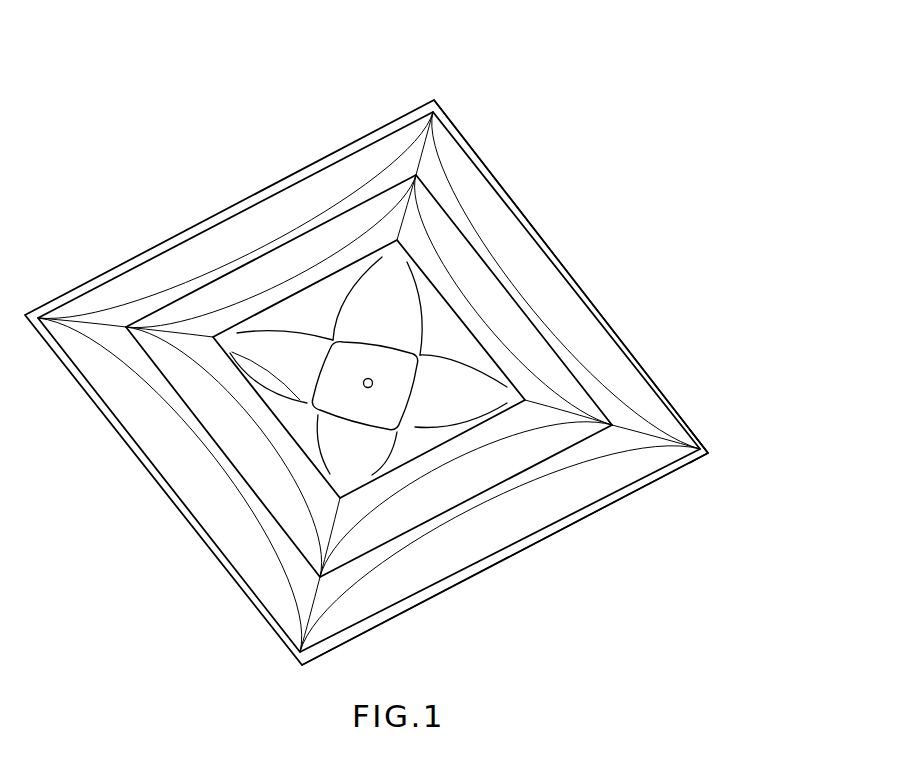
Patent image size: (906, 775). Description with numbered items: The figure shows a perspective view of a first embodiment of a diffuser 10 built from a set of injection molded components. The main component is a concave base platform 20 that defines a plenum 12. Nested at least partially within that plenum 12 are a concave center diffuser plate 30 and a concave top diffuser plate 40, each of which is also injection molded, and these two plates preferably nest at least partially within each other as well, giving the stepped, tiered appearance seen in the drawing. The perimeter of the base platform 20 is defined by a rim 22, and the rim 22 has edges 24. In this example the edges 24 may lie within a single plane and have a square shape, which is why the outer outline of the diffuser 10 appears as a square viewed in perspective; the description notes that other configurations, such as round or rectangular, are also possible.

The diffuser 10 is at (482, 116).
The plenum 12 is at (475, 196).
The concave base platform 20 is at (650, 352).
The rim 22 is at (686, 397).
The edges 24 is at (707, 450).
The concave center diffuser plate 30 is at (563, 383).
The concave top diffuser plate 40 is at (475, 367).